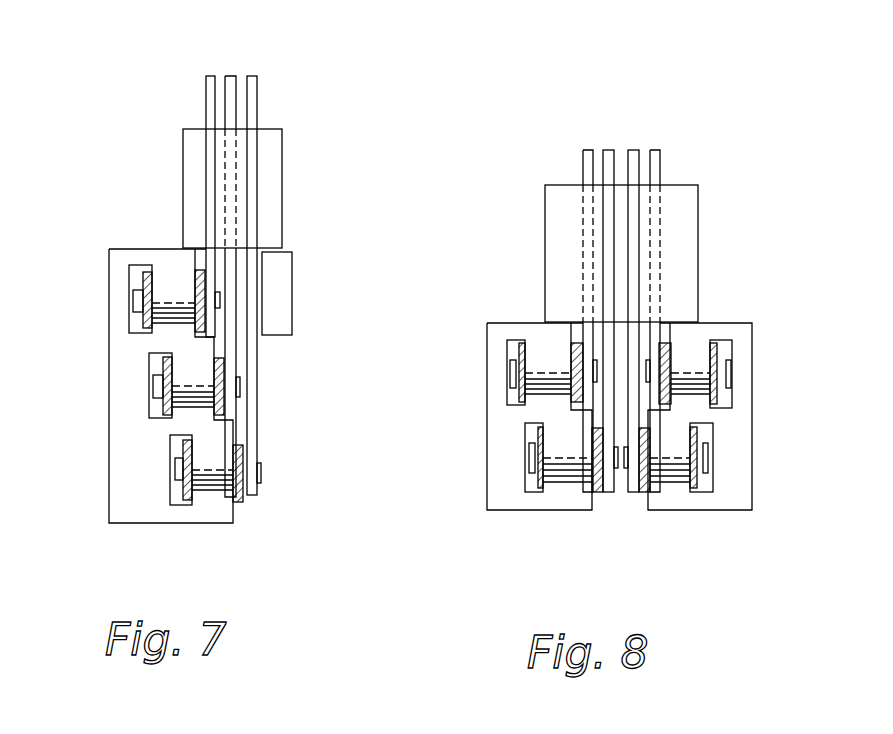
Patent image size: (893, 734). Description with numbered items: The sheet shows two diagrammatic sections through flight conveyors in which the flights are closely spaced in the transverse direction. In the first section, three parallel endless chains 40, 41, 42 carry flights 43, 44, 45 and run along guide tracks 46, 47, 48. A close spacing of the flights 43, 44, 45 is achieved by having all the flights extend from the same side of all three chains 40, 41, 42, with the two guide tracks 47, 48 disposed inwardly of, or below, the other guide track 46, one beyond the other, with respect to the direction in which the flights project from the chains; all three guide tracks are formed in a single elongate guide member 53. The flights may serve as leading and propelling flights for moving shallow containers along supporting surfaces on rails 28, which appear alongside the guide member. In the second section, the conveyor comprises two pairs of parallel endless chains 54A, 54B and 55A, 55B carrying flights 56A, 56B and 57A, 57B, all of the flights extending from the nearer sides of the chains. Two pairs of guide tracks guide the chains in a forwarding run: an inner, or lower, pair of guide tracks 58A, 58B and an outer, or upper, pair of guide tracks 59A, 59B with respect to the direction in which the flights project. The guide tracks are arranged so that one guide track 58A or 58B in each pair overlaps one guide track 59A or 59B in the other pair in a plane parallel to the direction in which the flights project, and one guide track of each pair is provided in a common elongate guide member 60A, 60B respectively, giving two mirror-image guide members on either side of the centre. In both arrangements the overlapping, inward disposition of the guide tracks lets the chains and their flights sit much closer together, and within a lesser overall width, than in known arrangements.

In FIG. 7, the rails 28 is at (278, 272).
In FIG. 7, the endless chain 40 is at (168, 287).
In FIG. 7, the endless chain 41 is at (208, 462).
In FIG. 7, the endless chain 42 is at (185, 373).
In FIG. 7, the flight 43 is at (212, 98).
In FIG. 7, the flight 44 is at (252, 98).
In FIG. 7, the flight 45 is at (232, 87).
In FIG. 7, the guide track 46 is at (128, 308).
In FIG. 7, the guide track 47 is at (170, 488).
In FIG. 7, the guide track 48 is at (145, 398).
In FIG. 7, the elongate guide member 53 is at (143, 513).
In FIG. 8, the endless chain 54A is at (578, 467).
In FIG. 8, the endless chain 54B is at (668, 470).
In FIG. 8, the endless chain 55A is at (542, 350).
In FIG. 8, the endless chain 55B is at (687, 360).
In FIG. 8, the flight 56A is at (610, 212).
In FIG. 8, the flight 56B is at (635, 208).
In FIG. 8, the flight 57A is at (587, 178).
In FIG. 8, the flight 57B is at (655, 160).
In FIG. 8, the guide track 58A is at (523, 467).
In FIG. 8, the guide track 58B is at (717, 470).
In FIG. 8, the guide track 59A is at (505, 382).
In FIG. 8, the guide track 59B is at (737, 388).
In FIG. 8, the elongate guide member 60A is at (497, 343).
In FIG. 8, the elongate guide member 60B is at (738, 347).